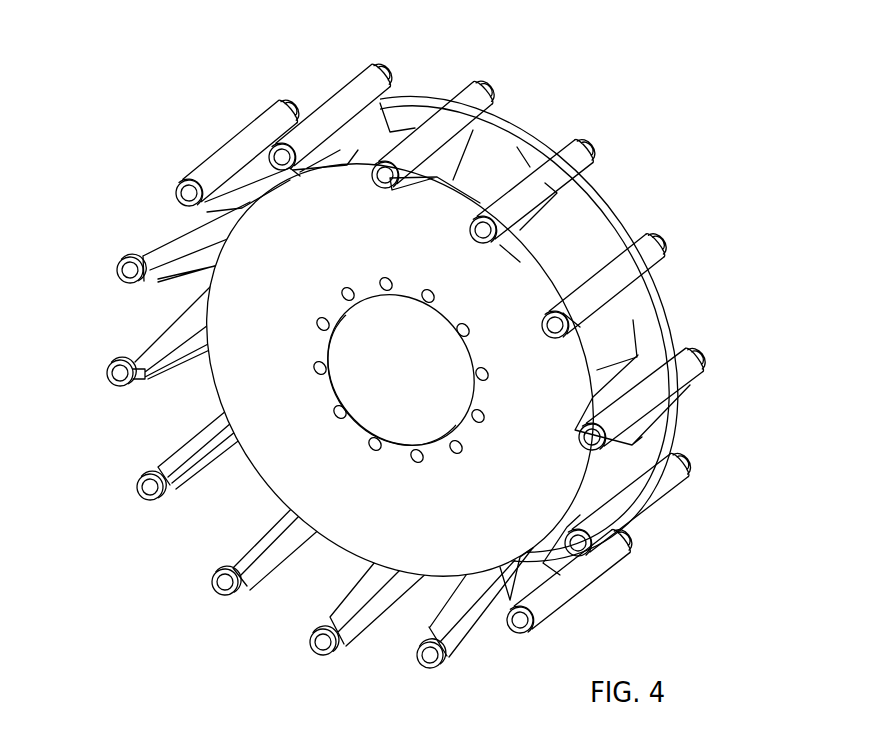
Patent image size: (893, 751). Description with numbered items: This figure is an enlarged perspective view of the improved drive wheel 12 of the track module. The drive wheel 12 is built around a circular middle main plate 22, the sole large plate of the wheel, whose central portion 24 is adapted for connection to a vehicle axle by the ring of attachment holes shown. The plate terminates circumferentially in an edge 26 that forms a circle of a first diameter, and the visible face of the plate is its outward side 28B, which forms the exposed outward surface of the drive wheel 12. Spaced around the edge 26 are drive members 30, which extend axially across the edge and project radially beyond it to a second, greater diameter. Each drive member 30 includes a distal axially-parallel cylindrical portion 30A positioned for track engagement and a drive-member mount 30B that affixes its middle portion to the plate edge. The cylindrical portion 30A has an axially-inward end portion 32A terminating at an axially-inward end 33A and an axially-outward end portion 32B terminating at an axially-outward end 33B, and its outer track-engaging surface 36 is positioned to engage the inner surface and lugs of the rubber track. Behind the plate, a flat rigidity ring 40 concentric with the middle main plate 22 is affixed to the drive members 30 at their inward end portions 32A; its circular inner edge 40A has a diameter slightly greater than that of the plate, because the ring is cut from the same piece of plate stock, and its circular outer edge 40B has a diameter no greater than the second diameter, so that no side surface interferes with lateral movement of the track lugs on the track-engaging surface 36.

The drive wheel 12 is at (674, 189).
The middle main plate 22 is at (355, 514).
The central portion 24 is at (347, 418).
The edge 26 is at (477, 197).
The outward side 28B is at (255, 362).
The drive member 30 is at (140, 357).
The cylindrical portion 30A is at (485, 92).
The drive-member mount 30B is at (443, 153).
The axially-inward end portion 32A is at (618, 560).
The axially-outward end portion 32B is at (540, 605).
The axially-inward end 33A is at (625, 545).
The axially-outward end 33B is at (520, 632).
The track-engaging surface 36 is at (217, 170).
The rigidity ring 40 is at (407, 112).
The inner edge 40A is at (635, 322).
The outer edge 40B is at (672, 425).